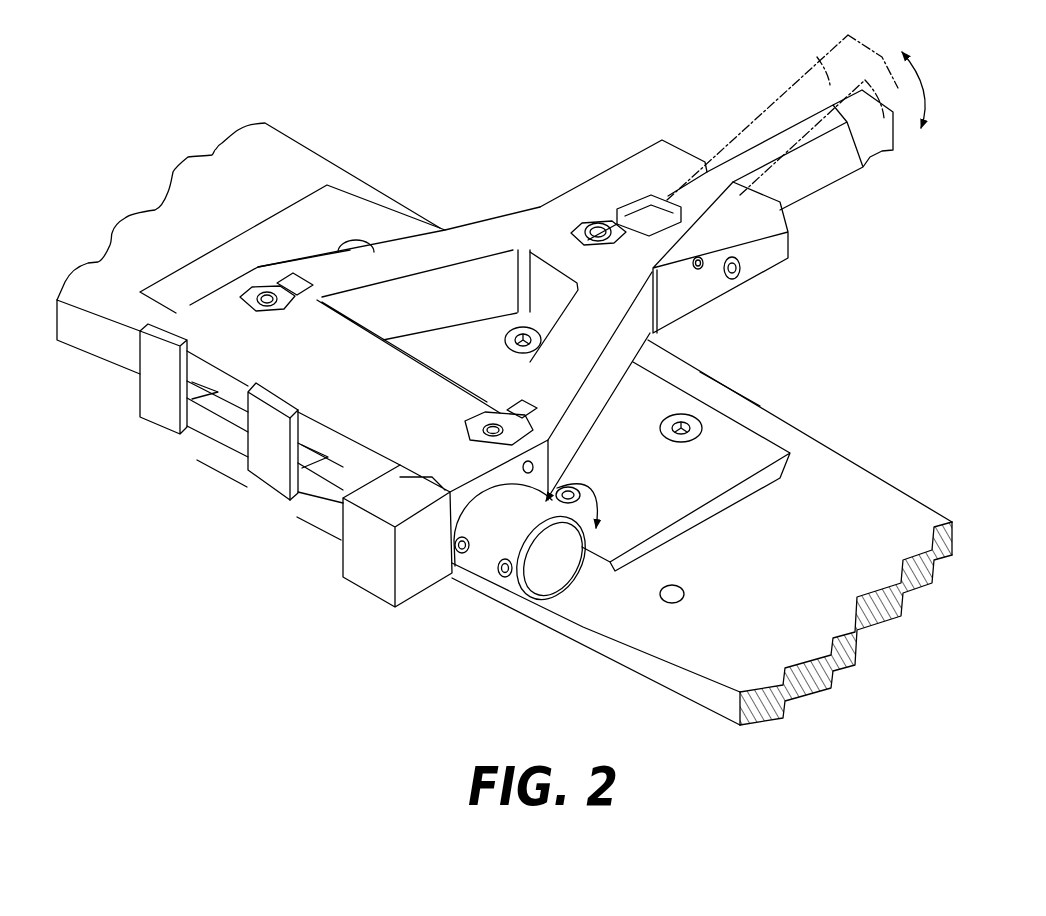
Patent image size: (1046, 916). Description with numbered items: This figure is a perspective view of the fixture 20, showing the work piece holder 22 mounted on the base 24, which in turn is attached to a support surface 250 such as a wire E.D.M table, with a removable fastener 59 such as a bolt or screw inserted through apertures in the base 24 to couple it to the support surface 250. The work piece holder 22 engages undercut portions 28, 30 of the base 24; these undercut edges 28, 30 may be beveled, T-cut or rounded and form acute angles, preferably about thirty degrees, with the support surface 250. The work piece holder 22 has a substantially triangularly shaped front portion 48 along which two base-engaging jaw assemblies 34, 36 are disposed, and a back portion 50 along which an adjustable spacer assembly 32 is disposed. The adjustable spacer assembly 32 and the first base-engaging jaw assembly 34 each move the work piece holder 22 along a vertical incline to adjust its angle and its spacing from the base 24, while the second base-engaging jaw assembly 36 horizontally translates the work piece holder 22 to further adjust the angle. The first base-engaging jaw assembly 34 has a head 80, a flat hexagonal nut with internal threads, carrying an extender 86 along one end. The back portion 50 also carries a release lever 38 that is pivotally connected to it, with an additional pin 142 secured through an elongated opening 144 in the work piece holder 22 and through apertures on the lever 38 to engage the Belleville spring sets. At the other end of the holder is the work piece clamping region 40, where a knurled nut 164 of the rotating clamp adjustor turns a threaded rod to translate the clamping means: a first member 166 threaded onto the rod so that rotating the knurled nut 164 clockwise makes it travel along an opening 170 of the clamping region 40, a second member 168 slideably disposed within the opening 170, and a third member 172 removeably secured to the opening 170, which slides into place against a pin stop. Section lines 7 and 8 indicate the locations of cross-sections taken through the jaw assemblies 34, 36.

The fixture 20 is at (540, 104).
The work piece holder 22 is at (472, 238).
The base 24 is at (702, 485).
The undercut portion 28 is at (758, 413).
The undercut portion 30 is at (155, 315).
The adjustable spacer assembly 32 is at (565, 236).
The first base-engaging jaw assembly 34 is at (458, 425).
The second base-engaging jaw assembly 36 is at (258, 279).
The release lever 38 is at (850, 183).
The work piece clamping region 40 is at (215, 543).
The front portion 48 is at (342, 262).
The back portion 50 is at (703, 139).
The fastener 59 is at (364, 236).
The section line 7- 7 is at (430, 448).
The section line 8- 8 is at (246, 279).
The head 80 is at (482, 436).
The extender 86 is at (540, 410).
The additional pin 142 is at (735, 264).
The elongated opening 144 is at (740, 273).
The knurled nut 164 is at (550, 575).
The first member 166 is at (152, 398).
The second member 168 is at (288, 512).
The opening 170 is at (318, 489).
The third member 172 is at (432, 487).
The support surface 250 is at (870, 472).